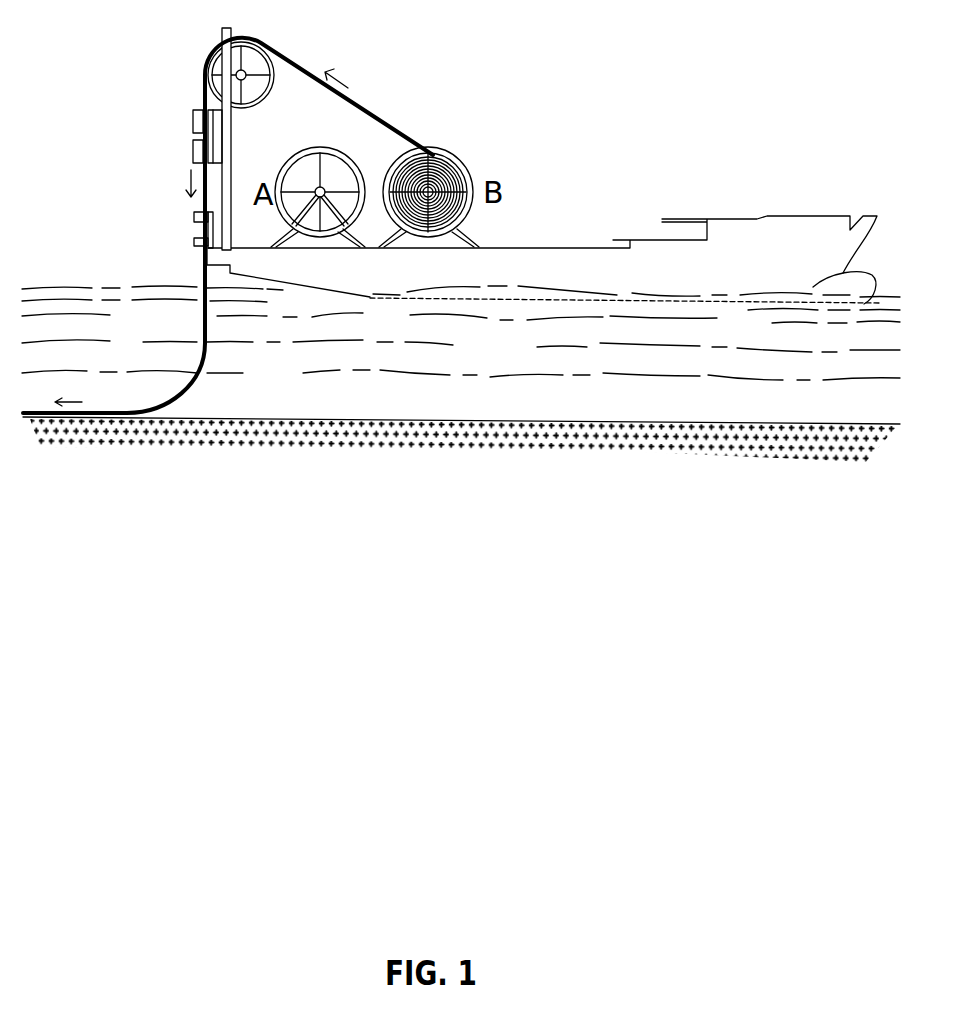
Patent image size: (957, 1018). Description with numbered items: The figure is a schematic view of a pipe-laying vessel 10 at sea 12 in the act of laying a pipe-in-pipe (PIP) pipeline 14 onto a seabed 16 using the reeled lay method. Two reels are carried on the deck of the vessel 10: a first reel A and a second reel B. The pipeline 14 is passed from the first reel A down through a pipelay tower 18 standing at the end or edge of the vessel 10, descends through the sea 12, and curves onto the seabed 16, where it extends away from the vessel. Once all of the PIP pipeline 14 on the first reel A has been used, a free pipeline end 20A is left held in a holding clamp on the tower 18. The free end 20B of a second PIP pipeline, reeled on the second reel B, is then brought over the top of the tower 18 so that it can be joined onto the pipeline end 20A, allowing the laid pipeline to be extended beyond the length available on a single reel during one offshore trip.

The pipe-laying vessel 10 is at (780, 216).
The sea 12 is at (57, 295).
The PIP pipeline 14 is at (190, 387).
The seabed 16 is at (430, 422).
The pipelay tower 18 is at (232, 148).
The free pipeline end 20A is at (203, 262).
The free end of second PIP pipeline 20B is at (375, 107).